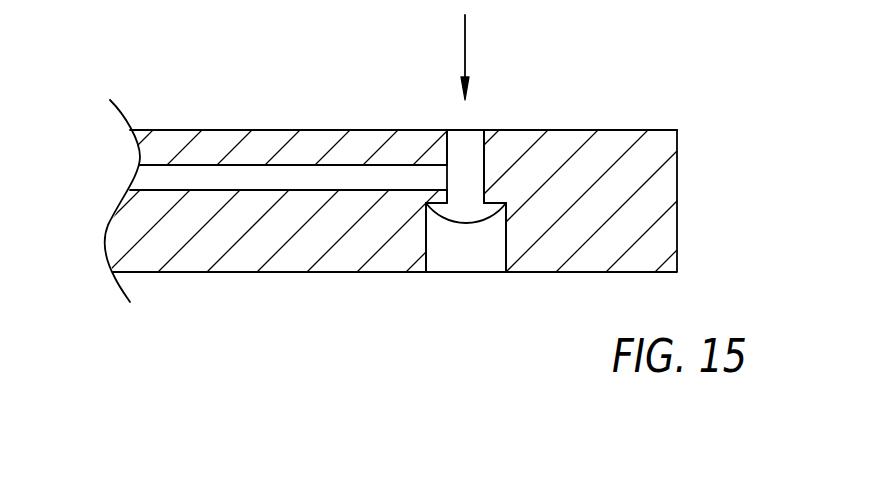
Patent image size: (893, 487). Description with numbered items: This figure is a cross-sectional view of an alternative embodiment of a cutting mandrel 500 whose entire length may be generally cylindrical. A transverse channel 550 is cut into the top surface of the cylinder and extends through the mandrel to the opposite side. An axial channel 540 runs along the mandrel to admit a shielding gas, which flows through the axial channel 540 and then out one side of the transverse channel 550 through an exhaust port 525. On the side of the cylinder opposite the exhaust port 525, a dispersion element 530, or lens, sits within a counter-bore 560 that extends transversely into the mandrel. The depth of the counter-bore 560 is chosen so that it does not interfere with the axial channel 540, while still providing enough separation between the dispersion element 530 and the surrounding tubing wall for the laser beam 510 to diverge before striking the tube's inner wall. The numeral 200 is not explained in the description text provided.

The base substrate layer 200 is at (243, 272).
The cutting mandrel 500 is at (670, 224).
The laser beam 510 is at (466, 52).
The exhaust port 525 is at (458, 143).
The dispersion element 530 is at (447, 220).
The axial channel 540 is at (147, 177).
The transverse channel 550 is at (484, 164).
The counter-bore 560 is at (506, 250).